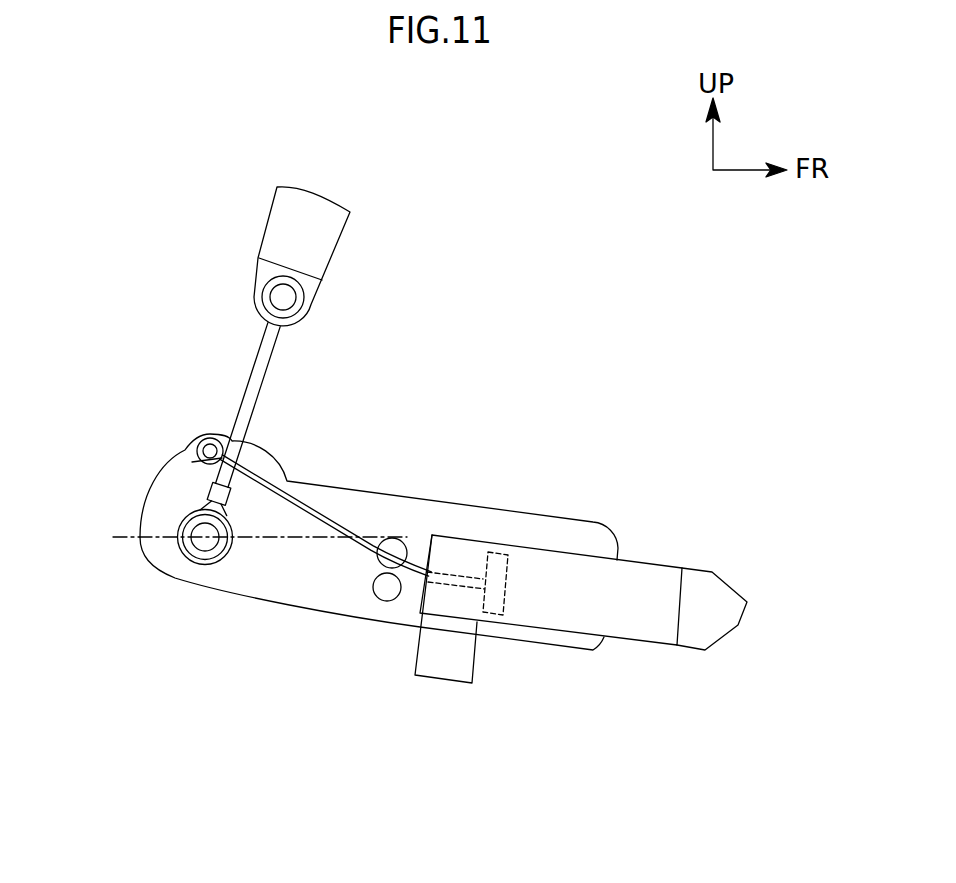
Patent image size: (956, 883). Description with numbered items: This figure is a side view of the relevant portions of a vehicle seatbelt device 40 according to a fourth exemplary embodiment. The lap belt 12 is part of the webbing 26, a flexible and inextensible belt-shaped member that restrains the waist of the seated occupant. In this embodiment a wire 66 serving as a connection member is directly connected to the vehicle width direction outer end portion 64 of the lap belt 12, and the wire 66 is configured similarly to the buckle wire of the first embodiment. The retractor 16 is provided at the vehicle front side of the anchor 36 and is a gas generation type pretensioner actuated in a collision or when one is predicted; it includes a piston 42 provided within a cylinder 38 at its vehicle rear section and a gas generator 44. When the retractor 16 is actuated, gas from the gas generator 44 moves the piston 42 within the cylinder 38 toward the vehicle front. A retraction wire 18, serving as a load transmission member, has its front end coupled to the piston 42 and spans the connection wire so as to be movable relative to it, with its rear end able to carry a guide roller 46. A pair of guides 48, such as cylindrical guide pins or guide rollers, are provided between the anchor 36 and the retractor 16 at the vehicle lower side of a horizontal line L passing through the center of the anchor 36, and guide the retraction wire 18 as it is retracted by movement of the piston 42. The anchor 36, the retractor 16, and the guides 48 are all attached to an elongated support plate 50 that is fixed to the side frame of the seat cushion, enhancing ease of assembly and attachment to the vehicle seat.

The lap belt 12 is at (265, 232).
The retractor 16 is at (652, 543).
The retraction wire 18 is at (305, 507).
The webbing 26 is at (377, 258).
The anchor 36 is at (203, 552).
The cylinder 38 is at (663, 563).
The vehicle seatbelt device 40 is at (588, 283).
The piston 42 is at (510, 562).
The gas generator 44 is at (443, 682).
The guide roller 46 is at (182, 460).
The guides 48 is at (372, 587).
The support plate 50 is at (568, 517).
The vehicle width direction outer end portion 64 is at (262, 295).
The wire 66 is at (245, 383).
The horizontal line L is at (123, 533).